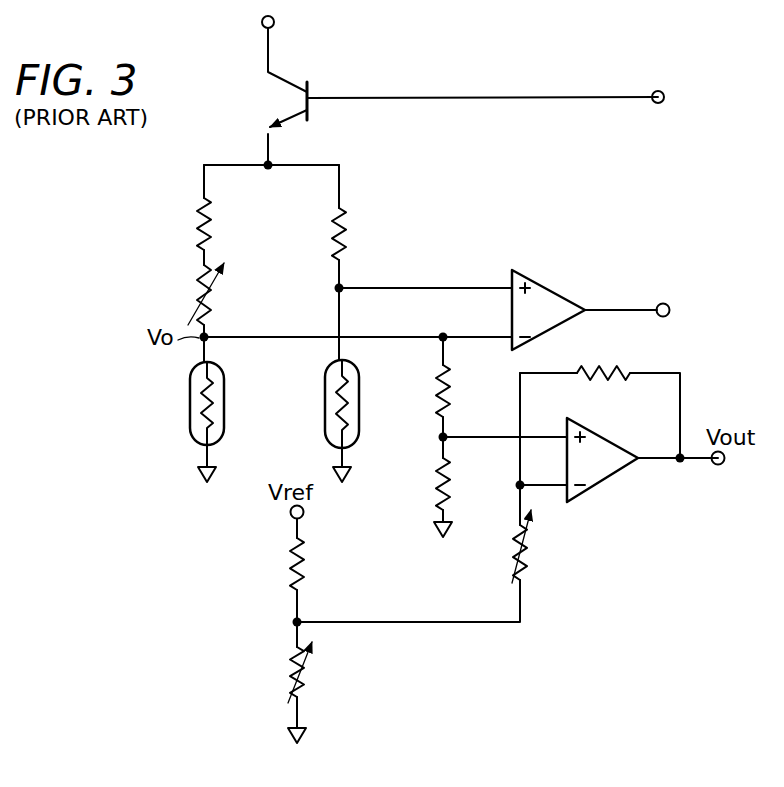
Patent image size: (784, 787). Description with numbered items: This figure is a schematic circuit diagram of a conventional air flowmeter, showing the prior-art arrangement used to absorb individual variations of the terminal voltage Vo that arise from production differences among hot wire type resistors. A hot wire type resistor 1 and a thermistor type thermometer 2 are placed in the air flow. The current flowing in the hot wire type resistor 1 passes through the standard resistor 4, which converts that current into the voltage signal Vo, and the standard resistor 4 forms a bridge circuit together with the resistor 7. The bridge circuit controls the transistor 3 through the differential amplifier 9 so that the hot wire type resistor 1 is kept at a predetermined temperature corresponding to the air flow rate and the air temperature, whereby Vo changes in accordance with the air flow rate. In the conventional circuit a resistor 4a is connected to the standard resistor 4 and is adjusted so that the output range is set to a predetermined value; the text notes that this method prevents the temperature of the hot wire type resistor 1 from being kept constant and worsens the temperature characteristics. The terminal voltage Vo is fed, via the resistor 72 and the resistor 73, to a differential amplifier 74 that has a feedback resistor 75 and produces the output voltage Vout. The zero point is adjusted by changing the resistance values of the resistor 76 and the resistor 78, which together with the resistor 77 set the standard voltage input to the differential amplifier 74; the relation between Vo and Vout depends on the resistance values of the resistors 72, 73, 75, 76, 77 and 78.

The transistor 3 is at (272, 48).
The standard resistor 4 is at (217, 234).
The resistor 4a is at (219, 304).
The resistor 7 is at (349, 240).
The differential amplifier 9 is at (543, 283).
The hot wire type resistor 1 is at (188, 418).
The thermistor type thermometer 2 is at (325, 421).
The resistor 72 is at (433, 398).
The resistor 73 is at (433, 480).
The differential amplifier 74 is at (612, 475).
The resistor 75 is at (600, 356).
The resistor 76 is at (526, 554).
The resistor 77 is at (286, 558).
The resistor 78 is at (290, 670).